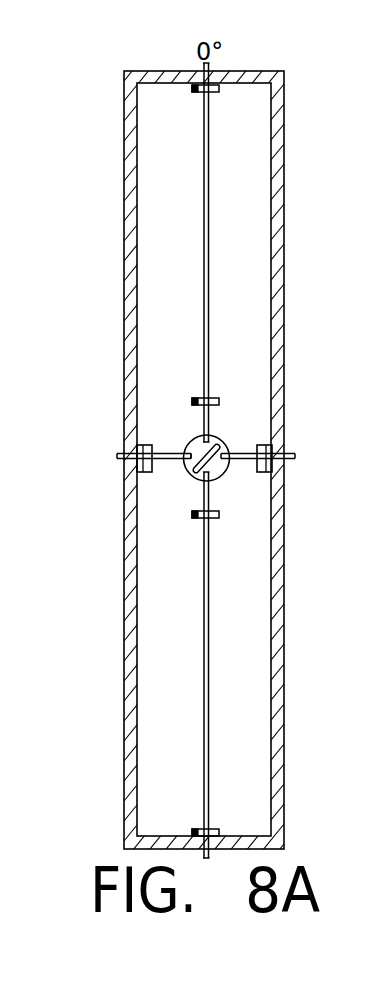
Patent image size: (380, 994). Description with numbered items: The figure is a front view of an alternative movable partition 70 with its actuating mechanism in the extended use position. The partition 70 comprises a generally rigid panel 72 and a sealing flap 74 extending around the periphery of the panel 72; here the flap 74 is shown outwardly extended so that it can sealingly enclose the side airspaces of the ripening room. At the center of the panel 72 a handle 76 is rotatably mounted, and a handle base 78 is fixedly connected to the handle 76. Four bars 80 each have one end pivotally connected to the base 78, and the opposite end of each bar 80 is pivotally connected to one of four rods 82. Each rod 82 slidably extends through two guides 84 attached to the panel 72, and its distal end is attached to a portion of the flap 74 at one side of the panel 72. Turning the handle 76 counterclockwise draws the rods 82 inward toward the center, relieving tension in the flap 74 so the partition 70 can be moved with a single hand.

The partition 70 is at (304, 111).
The panel 72 is at (255, 250).
The sealing flap 74 is at (278, 347).
The handle 76 is at (214, 450).
The handle base 78 is at (196, 445).
The bar 80 is at (172, 461).
The rod 82 is at (203, 265).
The guide 84 is at (219, 89).